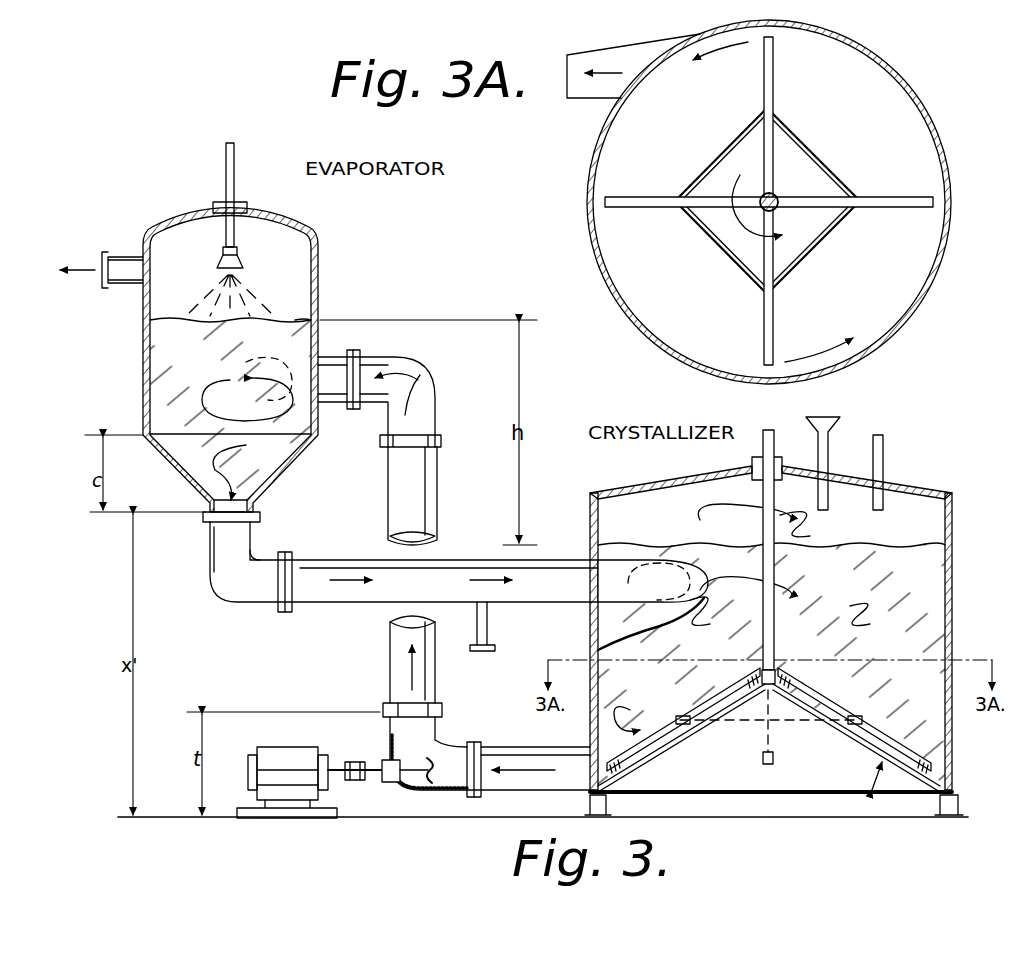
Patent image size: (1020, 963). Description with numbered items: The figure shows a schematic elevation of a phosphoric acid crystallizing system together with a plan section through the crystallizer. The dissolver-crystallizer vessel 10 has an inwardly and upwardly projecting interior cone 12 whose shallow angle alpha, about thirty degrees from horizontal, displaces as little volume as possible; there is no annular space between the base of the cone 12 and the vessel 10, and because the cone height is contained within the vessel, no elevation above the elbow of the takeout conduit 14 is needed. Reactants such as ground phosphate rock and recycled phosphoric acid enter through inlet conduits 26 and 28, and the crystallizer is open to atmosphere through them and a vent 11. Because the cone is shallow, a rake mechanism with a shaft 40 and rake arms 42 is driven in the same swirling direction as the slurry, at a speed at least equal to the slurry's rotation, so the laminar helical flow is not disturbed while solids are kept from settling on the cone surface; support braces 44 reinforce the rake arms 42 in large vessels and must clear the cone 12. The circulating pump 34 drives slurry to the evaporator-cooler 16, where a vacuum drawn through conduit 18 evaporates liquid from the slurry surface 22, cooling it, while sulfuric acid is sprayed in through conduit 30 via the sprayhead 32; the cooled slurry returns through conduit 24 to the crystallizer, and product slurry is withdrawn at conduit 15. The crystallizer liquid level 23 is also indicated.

In FIG. 3, the crystallizer vessel 10 is at (952, 598).
In FIG. 3A, the crystallizer vessel 10 is at (920, 312).
In FIG. 3, the vent 11 is at (930, 488).
In FIG. 3, the interior cone 12 is at (690, 722).
In FIG. 3, the takeout conduit 14 is at (437, 519).
In FIG. 3A, the takeout conduit 14 is at (604, 96).
In FIG. 3, the conduit 15 is at (490, 632).
In FIG. 3, the evaporator-cooler 16 is at (143, 364).
In FIG. 3, the conduit 18 is at (124, 257).
In FIG. 3, the surface of the slurry 22 is at (302, 320).
In FIG. 3, the crystallizer liquid level 23 is at (870, 545).
In FIG. 3, the conduit 24 is at (362, 605).
In FIG. 3, the inlet conduit 26 is at (826, 418).
In FIG. 3, the inlet conduit 28 is at (883, 447).
In FIG. 3, the conduit 30 is at (226, 165).
In FIG. 3, the sprayhead 32 is at (243, 262).
In FIG. 3, the circulating pump 34 is at (290, 748).
In FIG. 3, the shaft 40 is at (763, 492).
In FIG. 3A, the shaft 40 is at (776, 195).
In FIG. 3, the rake arms 42 is at (715, 712).
In FIG. 3A, the rake arms 42 is at (773, 88).
In FIG. 3, the support braces 44 is at (802, 722).
In FIG. 3A, the support braces 44 is at (812, 150).